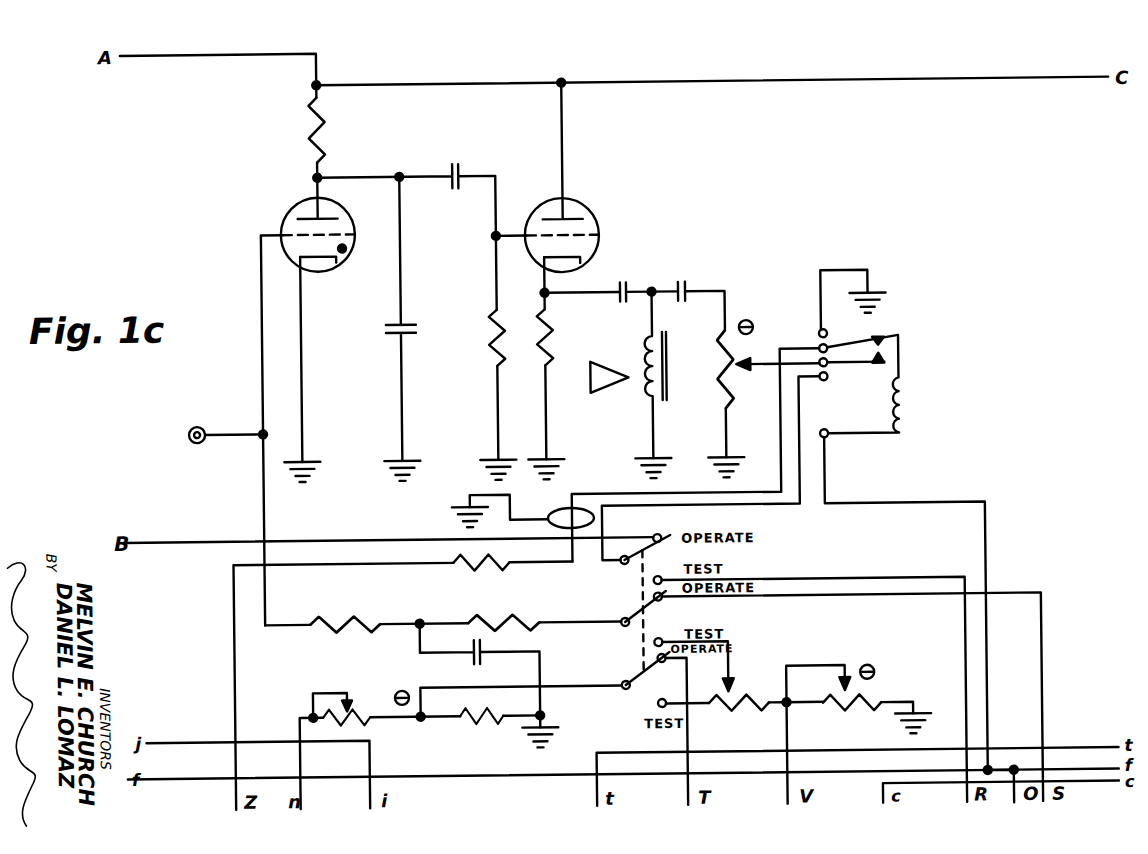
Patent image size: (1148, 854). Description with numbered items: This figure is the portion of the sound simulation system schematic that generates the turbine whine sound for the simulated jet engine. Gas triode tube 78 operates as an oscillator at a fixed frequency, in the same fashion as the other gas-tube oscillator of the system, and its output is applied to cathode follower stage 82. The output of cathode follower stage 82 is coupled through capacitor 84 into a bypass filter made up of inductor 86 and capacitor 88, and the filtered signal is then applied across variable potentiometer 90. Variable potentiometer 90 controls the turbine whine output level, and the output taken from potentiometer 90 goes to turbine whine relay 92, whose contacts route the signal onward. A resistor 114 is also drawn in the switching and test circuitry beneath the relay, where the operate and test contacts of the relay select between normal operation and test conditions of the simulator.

The gas triode tube 78 is at (336, 266).
The cathode follower stage 82 is at (588, 205).
The capacitor 84 is at (631, 285).
The inductor 86 is at (642, 378).
The capacitor 88 is at (690, 286).
The variable potentiometer 90 is at (722, 374).
The turbine whine relay 92 is at (907, 382).
The resistor 114 is at (473, 567).